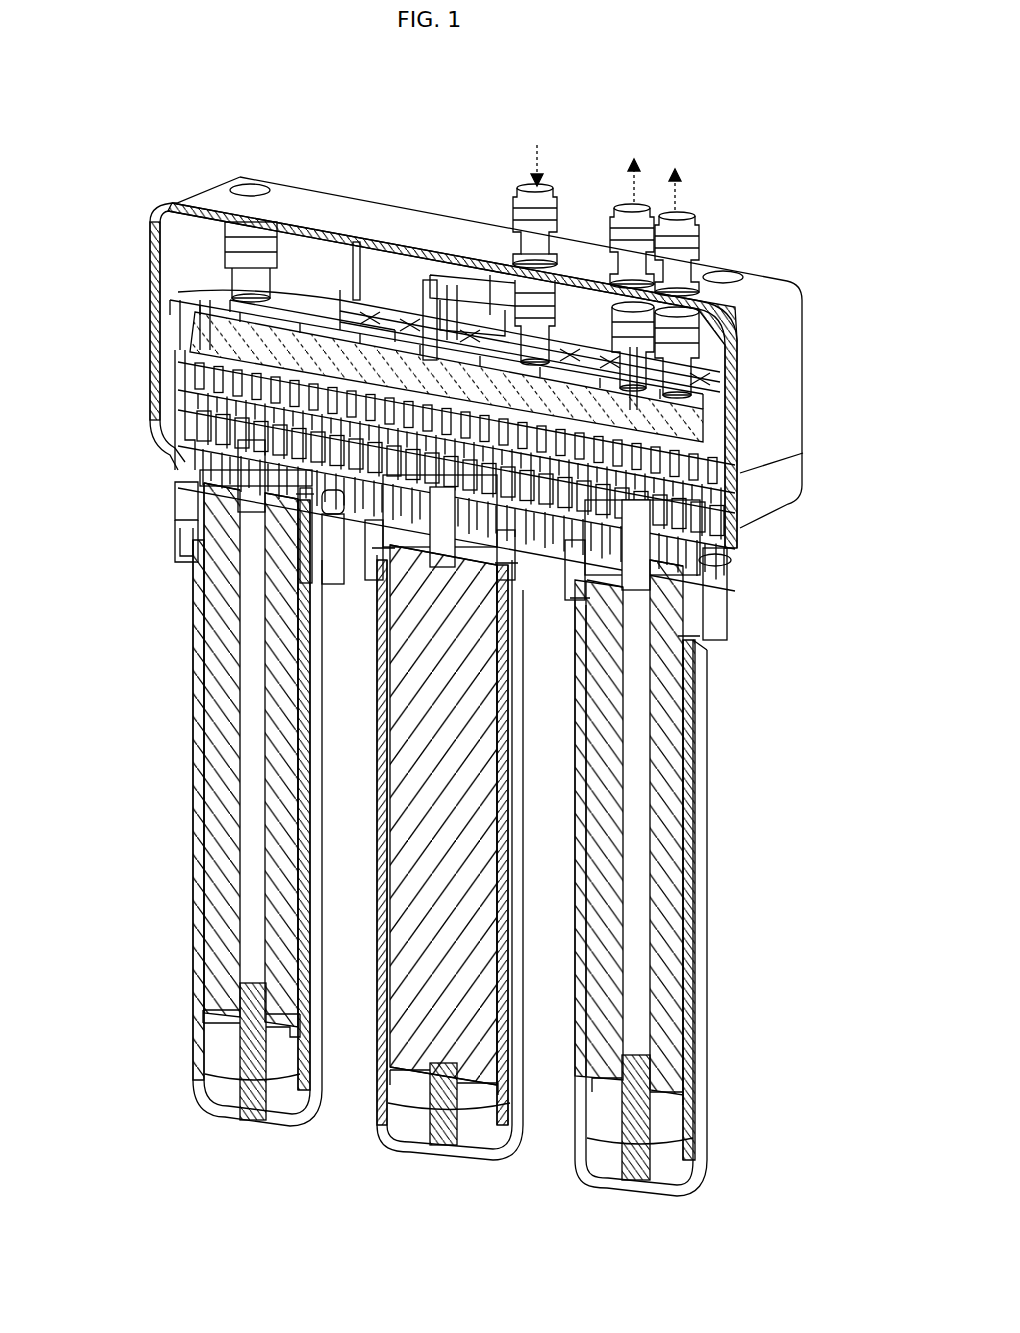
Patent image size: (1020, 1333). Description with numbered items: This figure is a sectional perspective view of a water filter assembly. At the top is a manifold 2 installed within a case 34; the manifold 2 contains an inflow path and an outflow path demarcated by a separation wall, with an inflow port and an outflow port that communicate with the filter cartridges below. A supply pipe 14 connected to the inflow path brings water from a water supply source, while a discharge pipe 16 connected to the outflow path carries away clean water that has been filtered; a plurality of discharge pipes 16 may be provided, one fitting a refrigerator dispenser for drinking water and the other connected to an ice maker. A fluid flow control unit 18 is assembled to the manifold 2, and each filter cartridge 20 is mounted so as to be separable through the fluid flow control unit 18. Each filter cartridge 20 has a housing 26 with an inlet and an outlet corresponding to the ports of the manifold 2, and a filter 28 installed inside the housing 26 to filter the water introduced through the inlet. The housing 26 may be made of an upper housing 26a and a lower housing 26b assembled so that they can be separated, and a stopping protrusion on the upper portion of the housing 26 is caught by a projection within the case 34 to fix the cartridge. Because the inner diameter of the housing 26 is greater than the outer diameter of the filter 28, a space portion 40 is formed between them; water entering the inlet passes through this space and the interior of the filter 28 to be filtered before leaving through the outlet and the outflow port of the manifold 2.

The manifold 2 is at (165, 300).
The supply pipe 14 is at (520, 185).
The discharge pipe 16 is at (625, 205).
The fluid flow control unit 18 is at (170, 437).
The filter cartridge 20 is at (195, 1100).
The housing 26 is at (62, 462).
The upper housing 26a is at (185, 492).
The lower housing 26b is at (185, 547).
The filter 28 is at (205, 775).
The case 34 is at (365, 197).
The space portion 40 is at (195, 706).